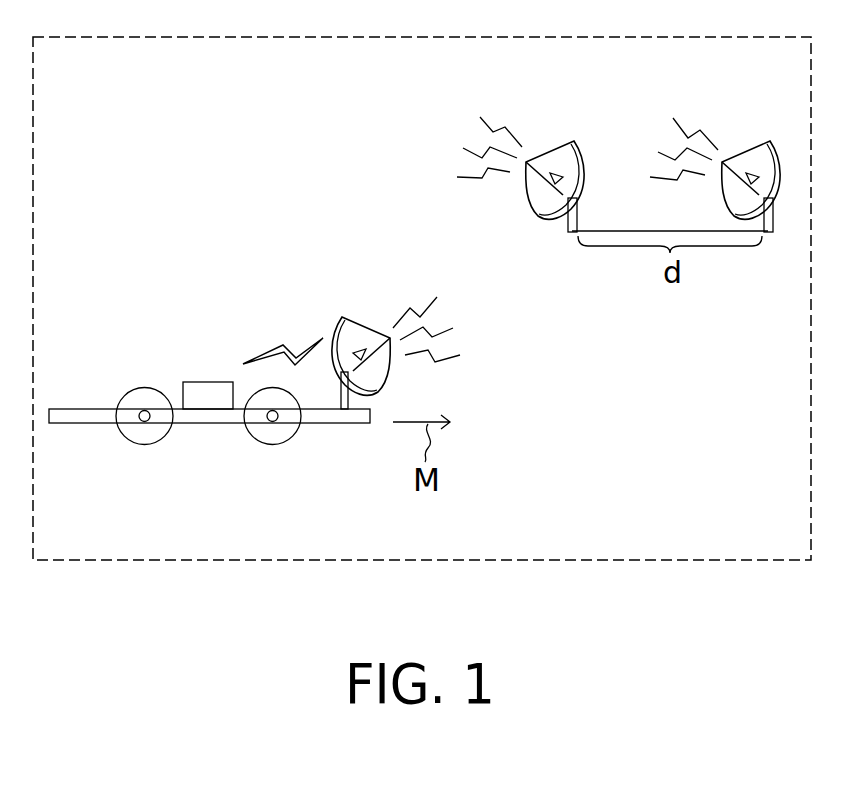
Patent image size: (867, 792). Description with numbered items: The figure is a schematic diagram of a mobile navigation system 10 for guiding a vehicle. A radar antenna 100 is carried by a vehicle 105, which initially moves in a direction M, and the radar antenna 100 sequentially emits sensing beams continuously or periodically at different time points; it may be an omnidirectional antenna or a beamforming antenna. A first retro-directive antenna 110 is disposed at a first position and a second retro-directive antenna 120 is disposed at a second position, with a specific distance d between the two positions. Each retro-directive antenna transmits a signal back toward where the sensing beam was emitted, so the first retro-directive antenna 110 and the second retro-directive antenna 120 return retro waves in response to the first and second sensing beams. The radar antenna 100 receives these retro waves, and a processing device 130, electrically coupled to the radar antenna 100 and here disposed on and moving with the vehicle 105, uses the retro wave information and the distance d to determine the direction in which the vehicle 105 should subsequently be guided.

The mobile navigation system 10 is at (782, 541).
The radar antenna 100 is at (342, 317).
The vehicle 105 is at (79, 417).
The first retro-directive antenna 110 is at (556, 142).
The second retro-directive antenna 120 is at (748, 146).
The processing device 130 is at (212, 388).